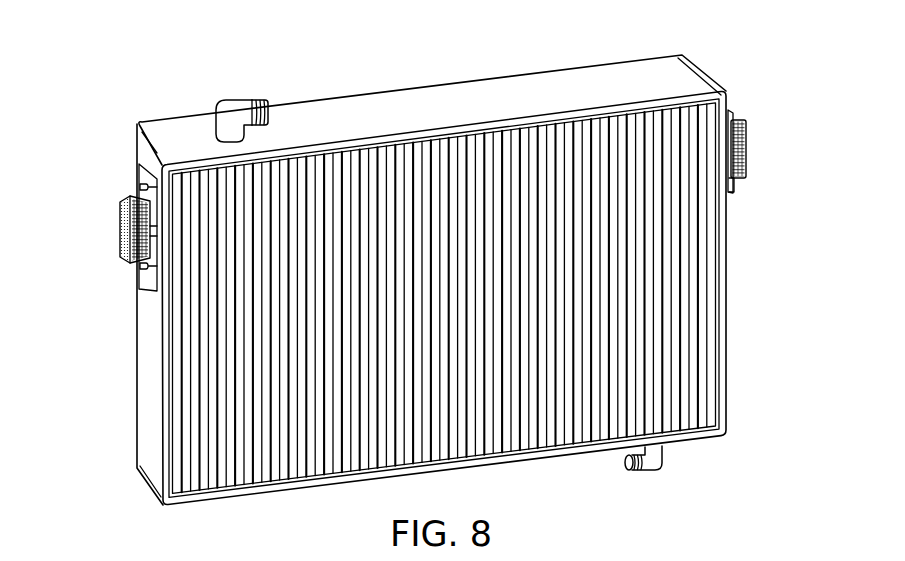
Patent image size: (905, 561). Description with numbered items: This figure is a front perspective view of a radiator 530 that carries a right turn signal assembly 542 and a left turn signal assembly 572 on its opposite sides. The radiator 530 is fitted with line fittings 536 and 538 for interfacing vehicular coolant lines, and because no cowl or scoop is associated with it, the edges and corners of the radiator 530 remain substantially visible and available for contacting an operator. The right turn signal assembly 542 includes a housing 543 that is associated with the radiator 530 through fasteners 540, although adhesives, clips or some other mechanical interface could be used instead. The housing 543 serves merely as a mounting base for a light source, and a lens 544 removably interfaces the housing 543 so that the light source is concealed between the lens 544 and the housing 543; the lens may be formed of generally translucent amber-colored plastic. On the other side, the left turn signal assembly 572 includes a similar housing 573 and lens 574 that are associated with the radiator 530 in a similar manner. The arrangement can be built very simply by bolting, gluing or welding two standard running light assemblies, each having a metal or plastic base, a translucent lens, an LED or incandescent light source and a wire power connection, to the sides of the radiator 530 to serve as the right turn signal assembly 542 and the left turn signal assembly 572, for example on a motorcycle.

The radiator 530 is at (470, 309).
The line fitting 536 is at (240, 104).
The line fitting 538 is at (663, 459).
The fasteners 540 is at (139, 186).
The right turn signal assembly 542 is at (126, 239).
The housing 543 is at (153, 282).
The lens 544 is at (152, 232).
The left turn signal assembly 572 is at (797, 147).
The housing 573 is at (766, 195).
The lens 574 is at (742, 118).